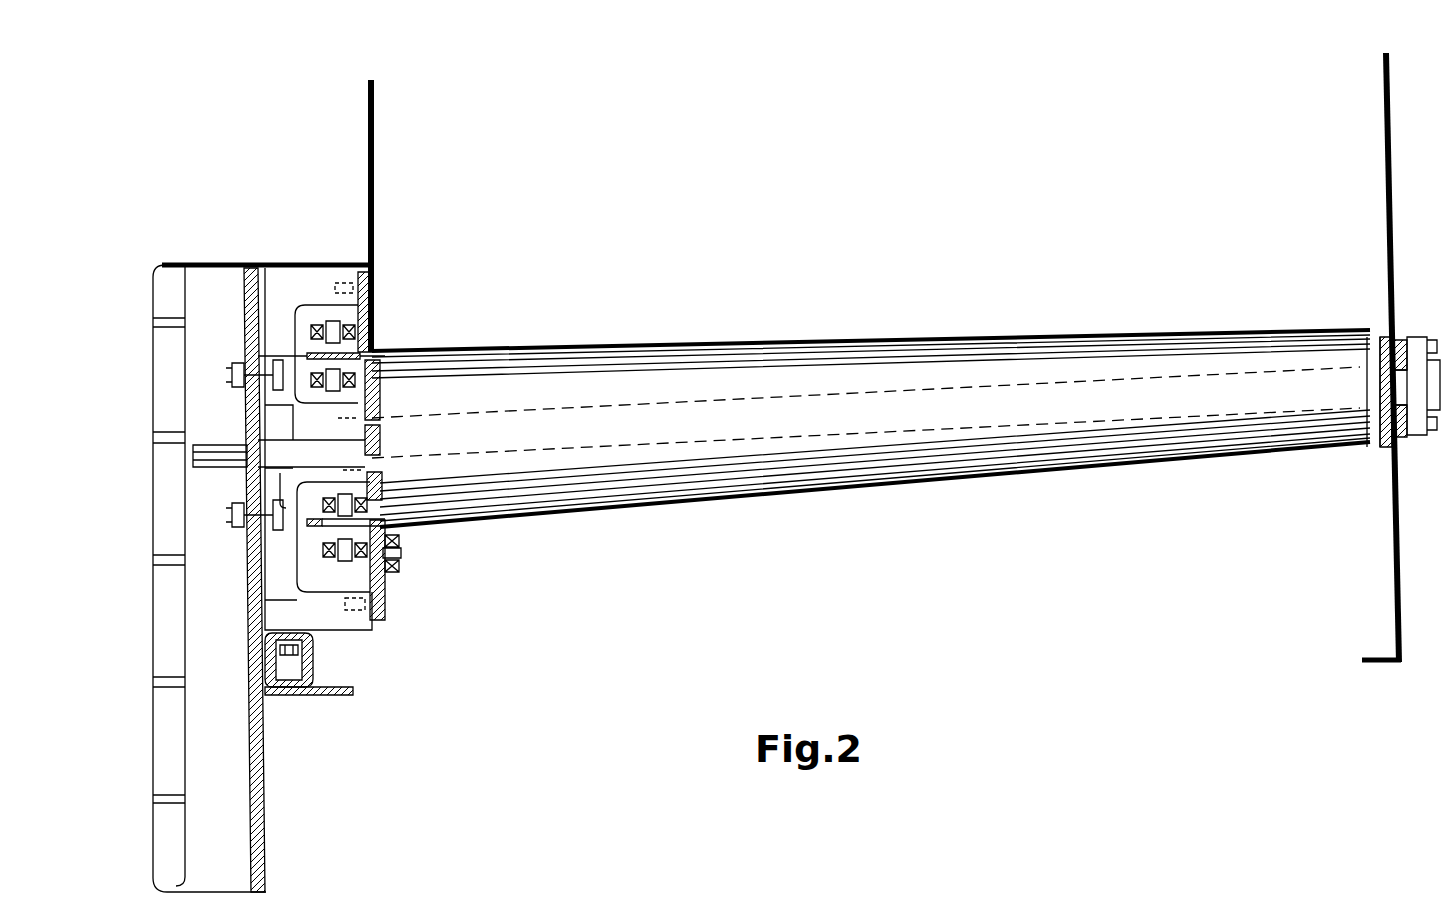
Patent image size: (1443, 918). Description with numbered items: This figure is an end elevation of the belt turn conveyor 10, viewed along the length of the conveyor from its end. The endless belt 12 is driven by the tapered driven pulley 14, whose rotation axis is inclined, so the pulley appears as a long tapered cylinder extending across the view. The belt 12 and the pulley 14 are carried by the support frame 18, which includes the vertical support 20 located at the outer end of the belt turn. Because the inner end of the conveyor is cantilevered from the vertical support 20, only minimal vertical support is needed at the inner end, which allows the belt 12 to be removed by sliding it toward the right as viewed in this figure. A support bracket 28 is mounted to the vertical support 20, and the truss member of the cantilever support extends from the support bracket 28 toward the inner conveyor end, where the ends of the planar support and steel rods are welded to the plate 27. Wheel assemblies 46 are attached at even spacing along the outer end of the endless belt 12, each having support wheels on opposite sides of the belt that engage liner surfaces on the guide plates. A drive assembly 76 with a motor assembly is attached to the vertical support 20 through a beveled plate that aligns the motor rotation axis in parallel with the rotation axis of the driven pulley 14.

The belt turn conveyor 10 is at (1312, 328).
The endless belt 12 is at (790, 342).
The driven pulley 14 is at (632, 342).
The support frame 18 is at (227, 258).
The vertical support 20 is at (263, 782).
The plate 27 is at (1340, 445).
The support bracket 28 is at (265, 275).
The wheel assembly 46 is at (372, 352).
The drive assembly 76 is at (153, 270).